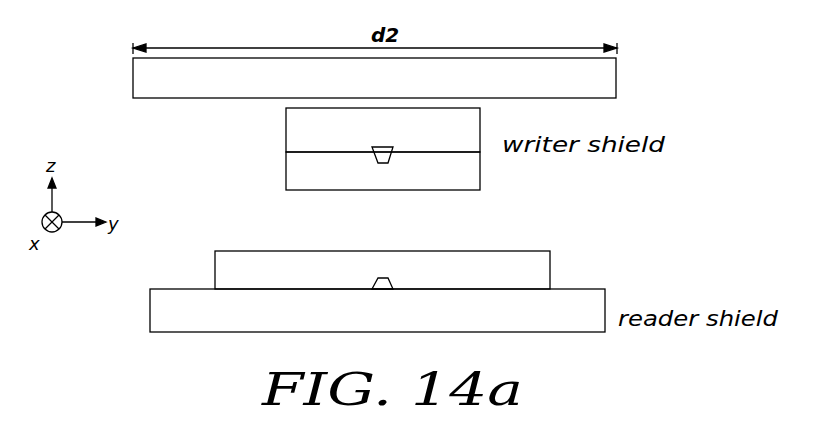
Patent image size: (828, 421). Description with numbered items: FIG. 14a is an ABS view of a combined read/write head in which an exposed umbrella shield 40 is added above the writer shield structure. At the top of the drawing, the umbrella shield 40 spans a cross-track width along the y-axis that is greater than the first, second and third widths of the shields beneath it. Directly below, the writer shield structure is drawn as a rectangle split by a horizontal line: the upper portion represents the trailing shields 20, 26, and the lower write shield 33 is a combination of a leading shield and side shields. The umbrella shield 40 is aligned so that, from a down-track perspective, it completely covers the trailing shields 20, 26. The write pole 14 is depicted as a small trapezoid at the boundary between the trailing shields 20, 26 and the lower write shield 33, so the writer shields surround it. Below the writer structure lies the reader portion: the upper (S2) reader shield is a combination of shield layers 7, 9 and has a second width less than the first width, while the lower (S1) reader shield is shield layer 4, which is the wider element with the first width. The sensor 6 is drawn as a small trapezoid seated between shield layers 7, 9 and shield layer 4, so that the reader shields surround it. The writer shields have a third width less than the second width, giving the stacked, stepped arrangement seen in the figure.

The umbrella shield 40 is at (605, 77).
The trailing shield 20 is at (331, 130).
The trailing shield 26 is at (302, 131).
The lower write shield 33 is at (302, 170).
The write pole 14 is at (383, 163).
The sensor 6 is at (381, 278).
The shield layer 7 is at (319, 270).
The shield layer 9 is at (237, 266).
The shield layer 4 is at (165, 315).